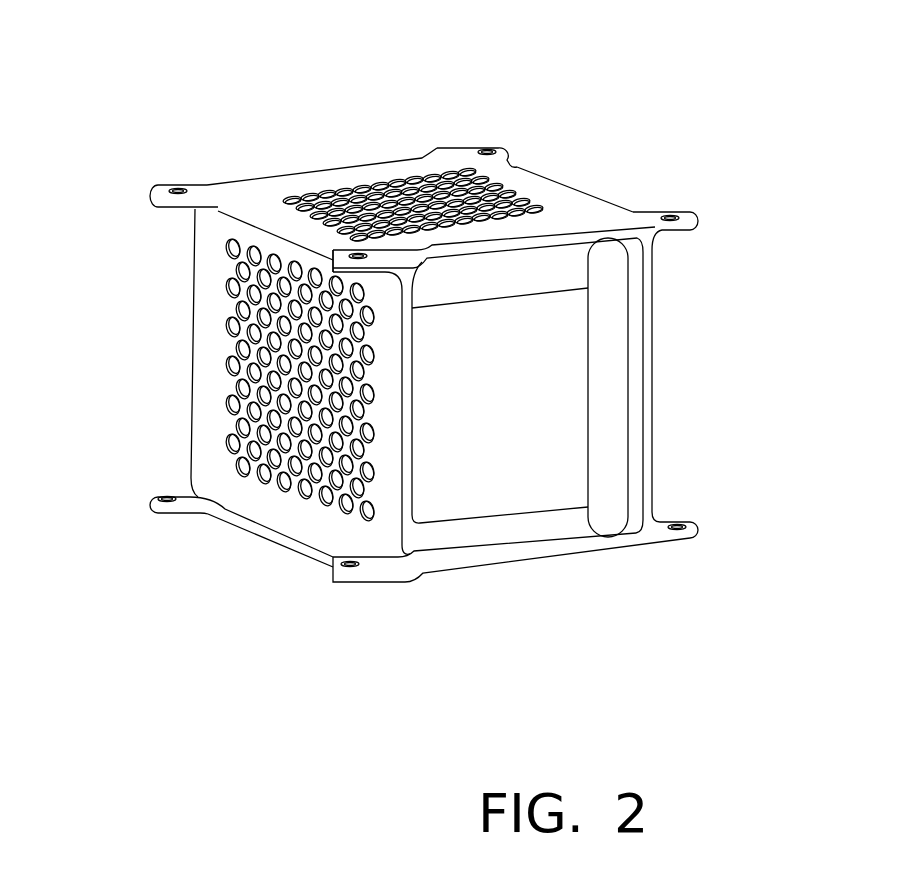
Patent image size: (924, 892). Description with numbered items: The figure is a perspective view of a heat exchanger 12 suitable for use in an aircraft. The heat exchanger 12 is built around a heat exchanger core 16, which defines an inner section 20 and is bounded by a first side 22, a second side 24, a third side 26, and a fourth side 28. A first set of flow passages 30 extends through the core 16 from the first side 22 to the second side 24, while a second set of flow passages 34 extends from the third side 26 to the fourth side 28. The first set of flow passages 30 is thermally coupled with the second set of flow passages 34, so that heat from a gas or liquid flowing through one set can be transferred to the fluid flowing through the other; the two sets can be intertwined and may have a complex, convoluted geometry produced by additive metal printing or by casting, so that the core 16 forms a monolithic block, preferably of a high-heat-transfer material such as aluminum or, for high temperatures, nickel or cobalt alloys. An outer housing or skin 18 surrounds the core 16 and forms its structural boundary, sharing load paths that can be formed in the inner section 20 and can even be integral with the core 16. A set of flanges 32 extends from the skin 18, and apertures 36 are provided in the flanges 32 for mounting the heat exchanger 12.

The heat exchanger 12 is at (862, 60).
The heat exchanger core 16 is at (565, 330).
The outer housing or skin 18 is at (258, 221).
The inner section 20 is at (607, 500).
The first side 22 is at (194, 458).
The second side 24 is at (652, 475).
The third side 26 is at (570, 210).
The fourth side 28 is at (500, 563).
The first set of flow passages 30 is at (333, 193).
The set of flanges 32 is at (152, 197).
The second set of flow passages 34 is at (285, 490).
The apertures 36 is at (178, 187).